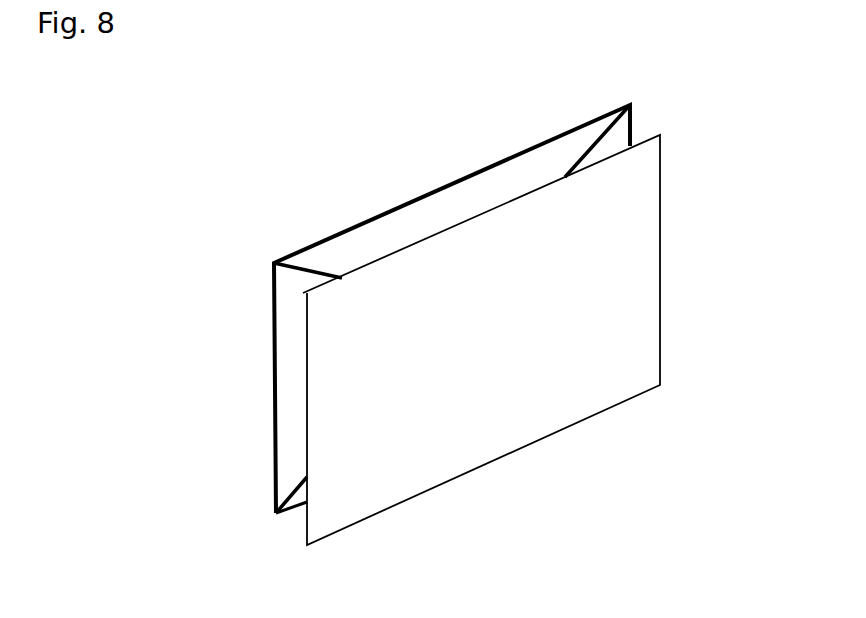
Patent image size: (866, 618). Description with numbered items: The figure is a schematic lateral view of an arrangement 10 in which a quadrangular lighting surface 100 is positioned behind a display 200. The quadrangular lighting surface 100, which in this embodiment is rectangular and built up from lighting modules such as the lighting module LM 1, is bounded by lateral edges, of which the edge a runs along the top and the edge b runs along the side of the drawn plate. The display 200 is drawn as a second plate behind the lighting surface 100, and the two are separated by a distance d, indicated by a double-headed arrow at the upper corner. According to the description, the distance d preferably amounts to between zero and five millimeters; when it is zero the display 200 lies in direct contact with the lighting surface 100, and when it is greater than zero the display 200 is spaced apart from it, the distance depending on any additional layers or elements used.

The optical assembly 10 is at (294, 567).
The quadrangular lighting surface 100 is at (525, 137).
The display 200 is at (595, 328).
The laminate LM 1 is at (287, 426).
The lateral edge a is at (452, 180).
The lateral edge b is at (267, 362).
The distance d is at (640, 110).